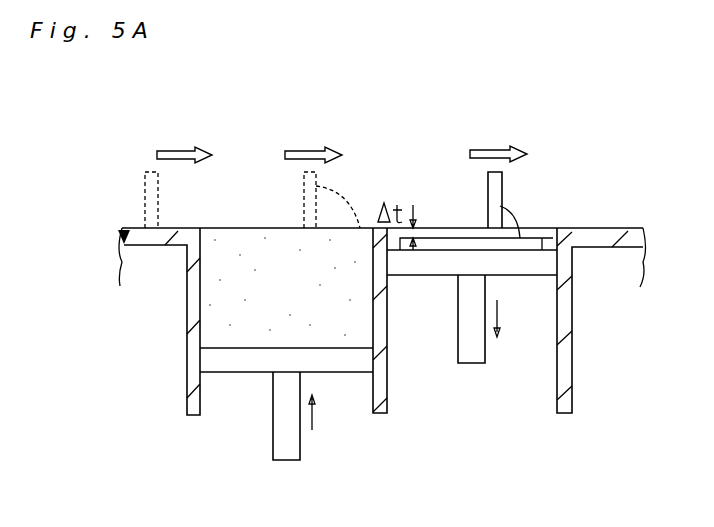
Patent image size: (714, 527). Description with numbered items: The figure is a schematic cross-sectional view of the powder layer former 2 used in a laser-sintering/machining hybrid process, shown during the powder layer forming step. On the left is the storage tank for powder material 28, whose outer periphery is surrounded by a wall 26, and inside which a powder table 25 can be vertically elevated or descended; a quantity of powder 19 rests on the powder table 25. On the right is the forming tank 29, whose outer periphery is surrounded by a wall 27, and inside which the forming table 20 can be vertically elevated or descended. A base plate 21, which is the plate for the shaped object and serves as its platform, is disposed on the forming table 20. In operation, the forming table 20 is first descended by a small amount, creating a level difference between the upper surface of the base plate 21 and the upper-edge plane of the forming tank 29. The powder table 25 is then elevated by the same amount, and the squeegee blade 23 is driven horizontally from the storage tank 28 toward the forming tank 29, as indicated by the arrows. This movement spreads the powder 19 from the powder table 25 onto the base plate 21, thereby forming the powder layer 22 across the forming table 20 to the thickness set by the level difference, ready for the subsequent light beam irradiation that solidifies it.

The powder layer former 2 is at (326, 124).
The powder 19 is at (305, 298).
The forming table 20 is at (530, 266).
The base plate 21 is at (430, 248).
The powder layer 22 is at (443, 232).
The squeegee blade 23 is at (503, 178).
The powder table 25 is at (245, 372).
The wall 26 is at (188, 352).
The wall 27 is at (572, 367).
The storage tank for powder material 28 is at (377, 453).
The forming tank 29 is at (572, 453).